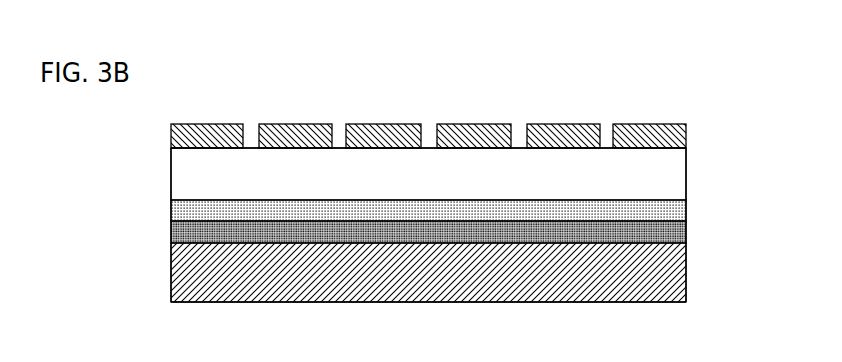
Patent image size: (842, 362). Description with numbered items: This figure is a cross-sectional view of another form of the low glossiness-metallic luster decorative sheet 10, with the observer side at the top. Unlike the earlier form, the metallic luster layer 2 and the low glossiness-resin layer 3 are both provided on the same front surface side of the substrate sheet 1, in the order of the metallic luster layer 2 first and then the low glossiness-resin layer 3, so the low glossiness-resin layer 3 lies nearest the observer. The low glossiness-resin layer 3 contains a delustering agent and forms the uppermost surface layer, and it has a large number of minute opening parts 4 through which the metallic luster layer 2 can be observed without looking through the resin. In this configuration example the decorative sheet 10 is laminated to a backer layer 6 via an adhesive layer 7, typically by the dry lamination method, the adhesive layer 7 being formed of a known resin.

The low glossiness-metallic luster decorative sheet 10 is at (590, 98).
The substrate sheet 1 is at (660, 171).
The metallic luster layer 2 is at (662, 208).
The low glossiness-resin layer 3 is at (662, 134).
The minute opening parts 4 is at (255, 128).
The backer layer 6 is at (662, 270).
The adhesive layer 7 is at (662, 233).